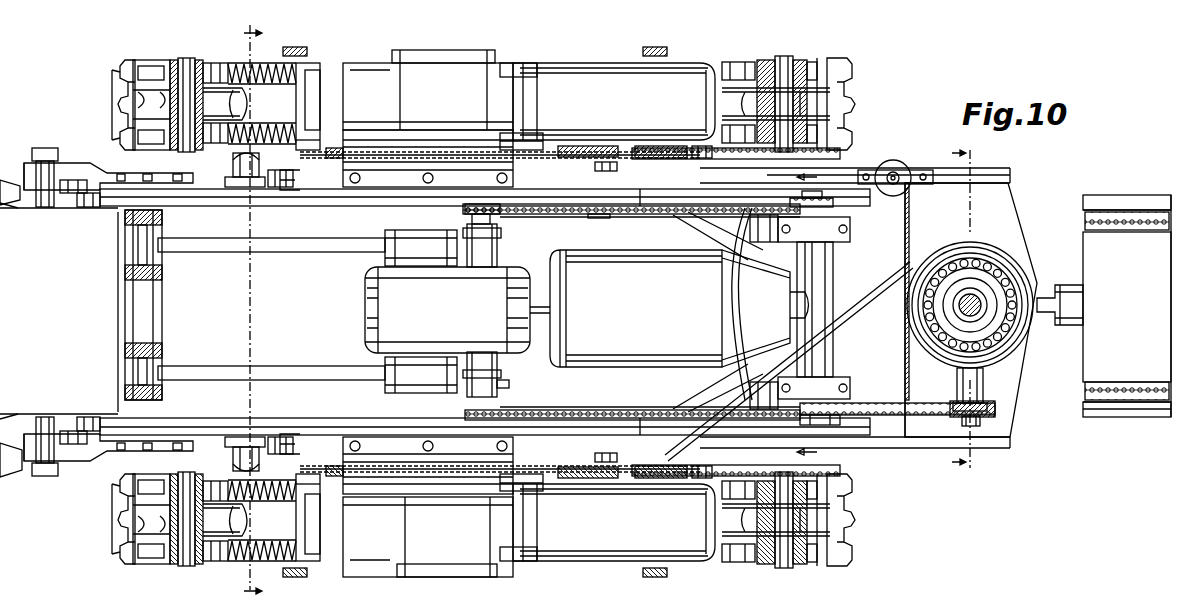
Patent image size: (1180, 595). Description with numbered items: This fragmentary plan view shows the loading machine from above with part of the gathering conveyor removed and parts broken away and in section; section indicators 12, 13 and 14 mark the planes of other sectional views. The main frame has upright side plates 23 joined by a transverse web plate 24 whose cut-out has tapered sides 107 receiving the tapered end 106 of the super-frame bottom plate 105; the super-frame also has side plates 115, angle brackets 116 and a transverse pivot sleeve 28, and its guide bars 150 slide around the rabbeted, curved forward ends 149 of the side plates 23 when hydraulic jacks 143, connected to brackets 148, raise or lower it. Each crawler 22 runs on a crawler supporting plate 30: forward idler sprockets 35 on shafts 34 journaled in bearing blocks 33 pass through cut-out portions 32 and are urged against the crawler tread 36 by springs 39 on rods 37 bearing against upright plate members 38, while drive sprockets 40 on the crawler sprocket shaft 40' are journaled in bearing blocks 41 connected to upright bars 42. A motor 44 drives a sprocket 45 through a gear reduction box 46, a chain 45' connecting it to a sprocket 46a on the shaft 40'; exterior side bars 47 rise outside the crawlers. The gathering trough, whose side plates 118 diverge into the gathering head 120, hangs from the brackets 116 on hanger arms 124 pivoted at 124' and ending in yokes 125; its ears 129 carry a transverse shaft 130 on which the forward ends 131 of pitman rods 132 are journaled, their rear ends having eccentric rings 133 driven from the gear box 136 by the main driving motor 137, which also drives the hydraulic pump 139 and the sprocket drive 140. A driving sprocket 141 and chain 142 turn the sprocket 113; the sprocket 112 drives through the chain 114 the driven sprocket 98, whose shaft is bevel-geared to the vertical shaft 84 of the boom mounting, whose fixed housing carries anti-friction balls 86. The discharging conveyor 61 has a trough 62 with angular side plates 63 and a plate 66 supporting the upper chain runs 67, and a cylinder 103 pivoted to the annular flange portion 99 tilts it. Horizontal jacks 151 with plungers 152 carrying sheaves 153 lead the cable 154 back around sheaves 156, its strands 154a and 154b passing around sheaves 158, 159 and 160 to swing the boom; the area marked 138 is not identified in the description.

The track rail 12 is at (855, 311).
The section line 13 is at (276, 308).
The section line 14 is at (951, 312).
The crawler 22 is at (116, 100).
The side plates 23 is at (354, 212).
The transverse web plate 24 is at (895, 401).
The transverse pivot sleeve 28 is at (832, 282).
The crawler supporting plates 30 is at (520, 63).
The cut-out portions 32 is at (246, 102).
The bearing blocks 33 is at (200, 62).
The shafts 34 is at (186, 60).
The forward idler sprockets 35 is at (173, 62).
The crawler tread 36 is at (150, 154).
The rods 37 is at (318, 130).
The upright plate members 38 is at (318, 62).
The springs 39 is at (222, 156).
The crawler drive sprockets 40 is at (821, 307).
The crawler sprocket shaft 40' is at (794, 307).
The bearing blocks 41 is at (765, 60).
The upright bars 42 is at (735, 62).
The motor 44 is at (428, 313).
The sprocket 45 is at (661, 312).
The chain 45' is at (696, 312).
The gear reduction box 46 is at (614, 312).
The sprocket 46a is at (842, 156).
The exterior side bars 47 is at (298, 47).
The discharging conveyor boom 61 is at (1116, 418).
The trough 62 is at (1160, 418).
The angular side plates 63 is at (1090, 195).
The plate 66 is at (1127, 307).
The upper runs 67 is at (1120, 230).
The vertical shaft 84 is at (967, 318).
The balls 86 is at (952, 266).
The driven sprocket 98 is at (982, 422).
The annular flange portion 99 is at (977, 258).
The cylinder 103 is at (1060, 326).
The bottom plate 105 is at (332, 308).
The tapered rearward end 106 is at (682, 222).
The tapered sides 107 is at (732, 270).
The chain drive sprocket 112 is at (826, 425).
The chain drive sprocket 113 is at (836, 203).
The chain 114 is at (890, 415).
The side plates 115 is at (380, 206).
The angle brackets 116 is at (76, 163).
The side plates 118 is at (84, 208).
The gathering head 120 is at (8, 462).
The hanger arms 124 is at (400, 312).
The pivot 124' is at (356, 295).
The yokes 125 is at (76, 208).
The ears 129 is at (163, 214).
The transverse shaft 130 is at (150, 312).
The forward ends 131 is at (134, 255).
The pitman rods 132 is at (272, 252).
The eccentric rings 133 is at (420, 250).
The gear box 136 is at (457, 310).
The main driving motor 137 is at (679, 308).
The frame 138 is at (20, 311).
The hydraulic pump 139 is at (500, 394).
The sprocket drive 140 is at (498, 251).
The driving sprocket 141 is at (500, 216).
The chain 142 is at (600, 218).
The hydraulic jacks 143 is at (240, 200).
The brackets 148 is at (270, 206).
The forward ends 149 is at (260, 170).
The guide bars 150 is at (292, 192).
The horizontal jacks 151 is at (420, 150).
The plungers 152 is at (540, 145).
The sheaves 153 is at (582, 146).
The cable 154 is at (476, 150).
The cable strand 154a is at (876, 366).
The cable strand 154b is at (905, 240).
The sheaves 156 is at (340, 148).
The sheave 158 is at (604, 462).
The sheave 159 is at (604, 162).
The sheave 160 is at (896, 160).